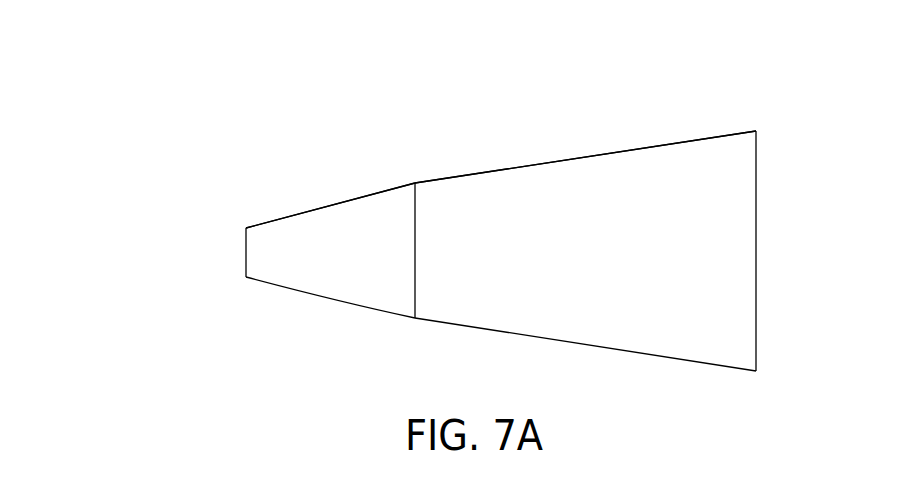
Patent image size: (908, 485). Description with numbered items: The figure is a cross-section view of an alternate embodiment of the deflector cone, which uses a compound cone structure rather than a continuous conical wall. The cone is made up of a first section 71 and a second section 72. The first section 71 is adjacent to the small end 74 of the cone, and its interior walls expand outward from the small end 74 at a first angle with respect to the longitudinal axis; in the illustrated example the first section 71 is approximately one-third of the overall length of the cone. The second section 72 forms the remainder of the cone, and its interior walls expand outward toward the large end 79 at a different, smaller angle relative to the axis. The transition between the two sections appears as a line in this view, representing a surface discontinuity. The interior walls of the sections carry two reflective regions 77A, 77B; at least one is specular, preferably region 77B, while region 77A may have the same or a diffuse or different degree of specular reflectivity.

The small end 74 is at (243, 223).
The first section 71 is at (300, 205).
The reflective region 77A is at (331, 211).
The second section 72 is at (509, 157).
The reflective region 77B is at (632, 155).
The large end 79 is at (762, 123).